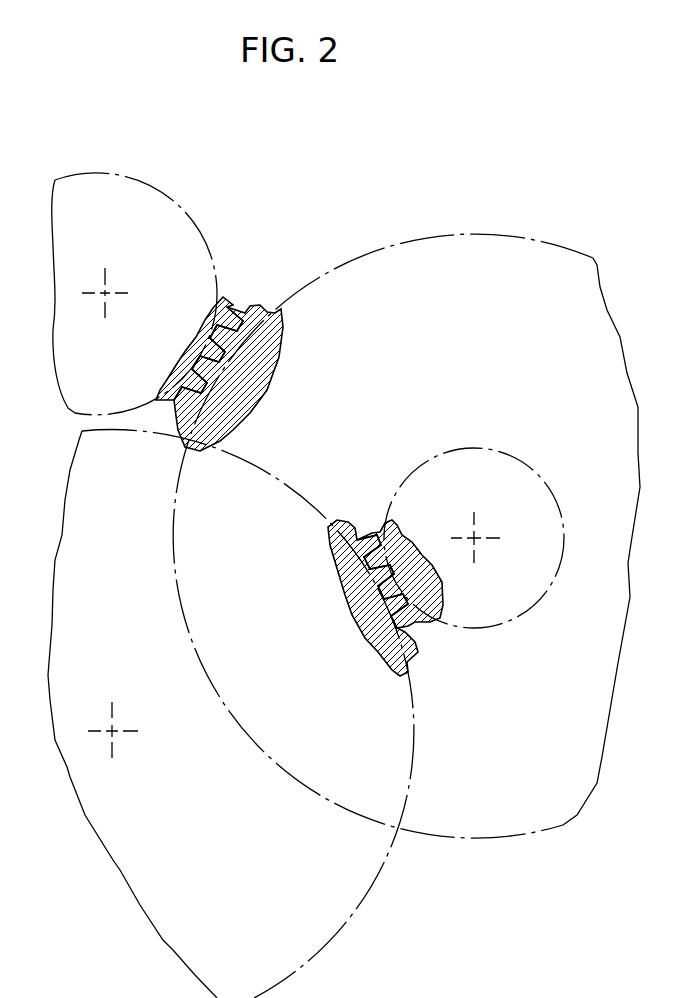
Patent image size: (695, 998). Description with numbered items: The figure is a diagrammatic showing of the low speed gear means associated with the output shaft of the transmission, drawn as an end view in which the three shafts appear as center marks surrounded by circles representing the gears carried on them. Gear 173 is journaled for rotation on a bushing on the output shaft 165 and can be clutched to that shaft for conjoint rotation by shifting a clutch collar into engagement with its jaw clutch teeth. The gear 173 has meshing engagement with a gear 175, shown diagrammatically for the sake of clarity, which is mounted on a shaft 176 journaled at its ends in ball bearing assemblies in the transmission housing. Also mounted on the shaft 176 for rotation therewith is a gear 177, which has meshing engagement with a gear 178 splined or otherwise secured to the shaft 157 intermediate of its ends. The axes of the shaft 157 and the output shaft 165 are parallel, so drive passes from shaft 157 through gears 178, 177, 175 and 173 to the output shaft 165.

The shaft 157 is at (105, 293).
The output shaft 165 is at (112, 731).
The gear 173 is at (412, 662).
The gear 175 is at (369, 532).
The shaft 176 is at (474, 538).
The gear 177 is at (187, 433).
The gear 178 is at (228, 310).